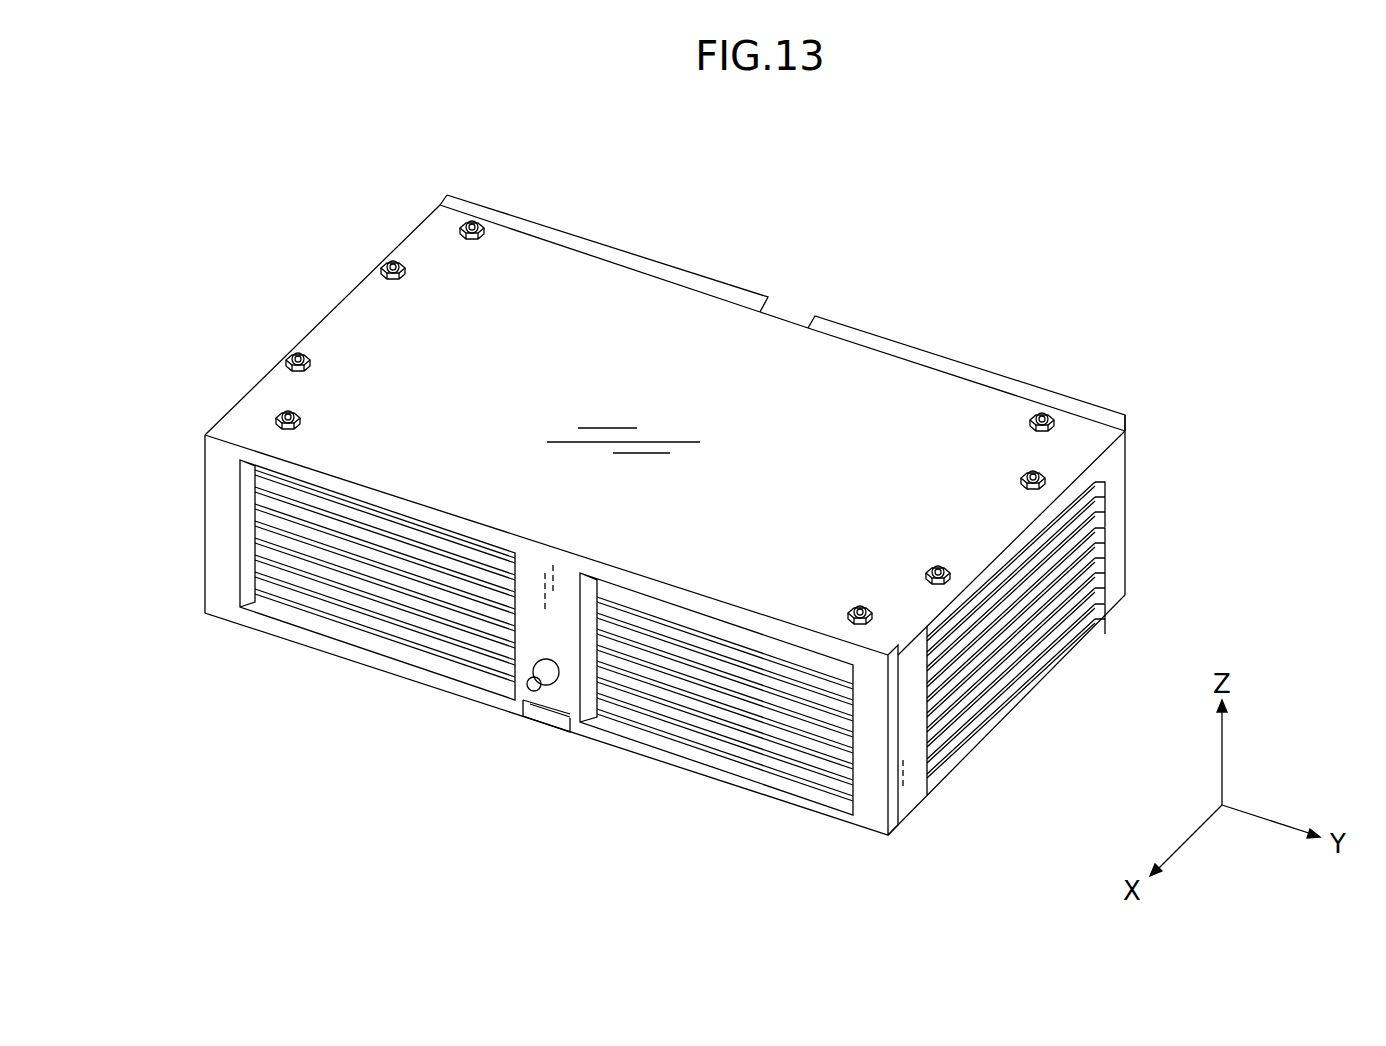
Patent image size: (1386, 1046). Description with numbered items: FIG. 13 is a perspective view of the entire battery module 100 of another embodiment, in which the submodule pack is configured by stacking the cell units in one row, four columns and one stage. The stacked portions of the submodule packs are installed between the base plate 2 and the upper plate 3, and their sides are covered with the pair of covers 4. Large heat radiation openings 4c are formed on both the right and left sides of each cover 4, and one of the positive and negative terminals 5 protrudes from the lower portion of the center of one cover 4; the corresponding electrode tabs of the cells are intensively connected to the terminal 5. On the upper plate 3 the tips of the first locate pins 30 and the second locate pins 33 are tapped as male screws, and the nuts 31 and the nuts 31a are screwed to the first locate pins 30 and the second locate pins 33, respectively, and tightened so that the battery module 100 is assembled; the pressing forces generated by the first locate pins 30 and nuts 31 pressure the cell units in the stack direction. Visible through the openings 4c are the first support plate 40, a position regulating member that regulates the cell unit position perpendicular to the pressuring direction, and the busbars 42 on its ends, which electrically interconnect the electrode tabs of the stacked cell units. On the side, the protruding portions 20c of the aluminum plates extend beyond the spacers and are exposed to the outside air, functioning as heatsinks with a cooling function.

The battery module 100 is at (832, 243).
The base plate 2 is at (948, 773).
The upper plate 3 is at (886, 368).
The cover 4 is at (1100, 493).
The heat radiation opening 4c is at (247, 578).
The terminal 5 is at (547, 695).
The protruding portion 20c is at (1100, 560).
The first locate pin 30 is at (393, 260).
The nut 31 is at (405, 272).
The nut 31a is at (484, 236).
The second locate pin 33 is at (474, 220).
The first support plate 40 is at (255, 583).
The busbar 42 is at (720, 720).